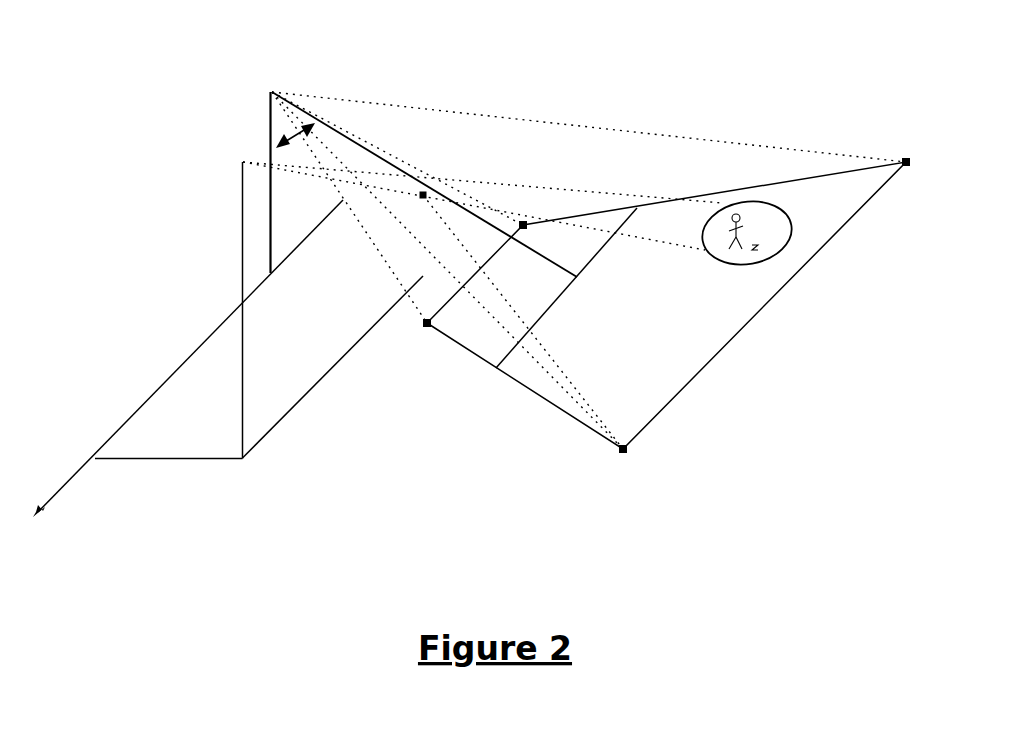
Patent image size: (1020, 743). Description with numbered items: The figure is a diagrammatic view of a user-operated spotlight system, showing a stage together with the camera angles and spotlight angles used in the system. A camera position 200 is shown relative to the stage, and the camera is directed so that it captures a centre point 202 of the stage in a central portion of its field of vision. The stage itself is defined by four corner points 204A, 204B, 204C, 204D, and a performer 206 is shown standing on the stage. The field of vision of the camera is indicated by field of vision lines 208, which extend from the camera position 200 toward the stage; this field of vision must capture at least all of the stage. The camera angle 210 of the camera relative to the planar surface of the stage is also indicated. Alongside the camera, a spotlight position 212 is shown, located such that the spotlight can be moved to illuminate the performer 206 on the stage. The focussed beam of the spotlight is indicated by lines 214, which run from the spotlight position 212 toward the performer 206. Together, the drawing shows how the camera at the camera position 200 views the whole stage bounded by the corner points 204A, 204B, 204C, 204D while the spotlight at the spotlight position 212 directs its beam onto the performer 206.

The camera position 200 is at (270, 90).
The centre point 202 is at (577, 277).
The corner point 204A is at (427, 327).
The corner point 204B is at (626, 450).
The corner point 204C is at (906, 160).
The corner point 204D is at (524, 226).
The performer 206 is at (732, 233).
The field of vision lines 208 is at (412, 165).
The camera angle 210 is at (280, 144).
The spotlight position 212 is at (243, 164).
The lines 214 is at (512, 183).